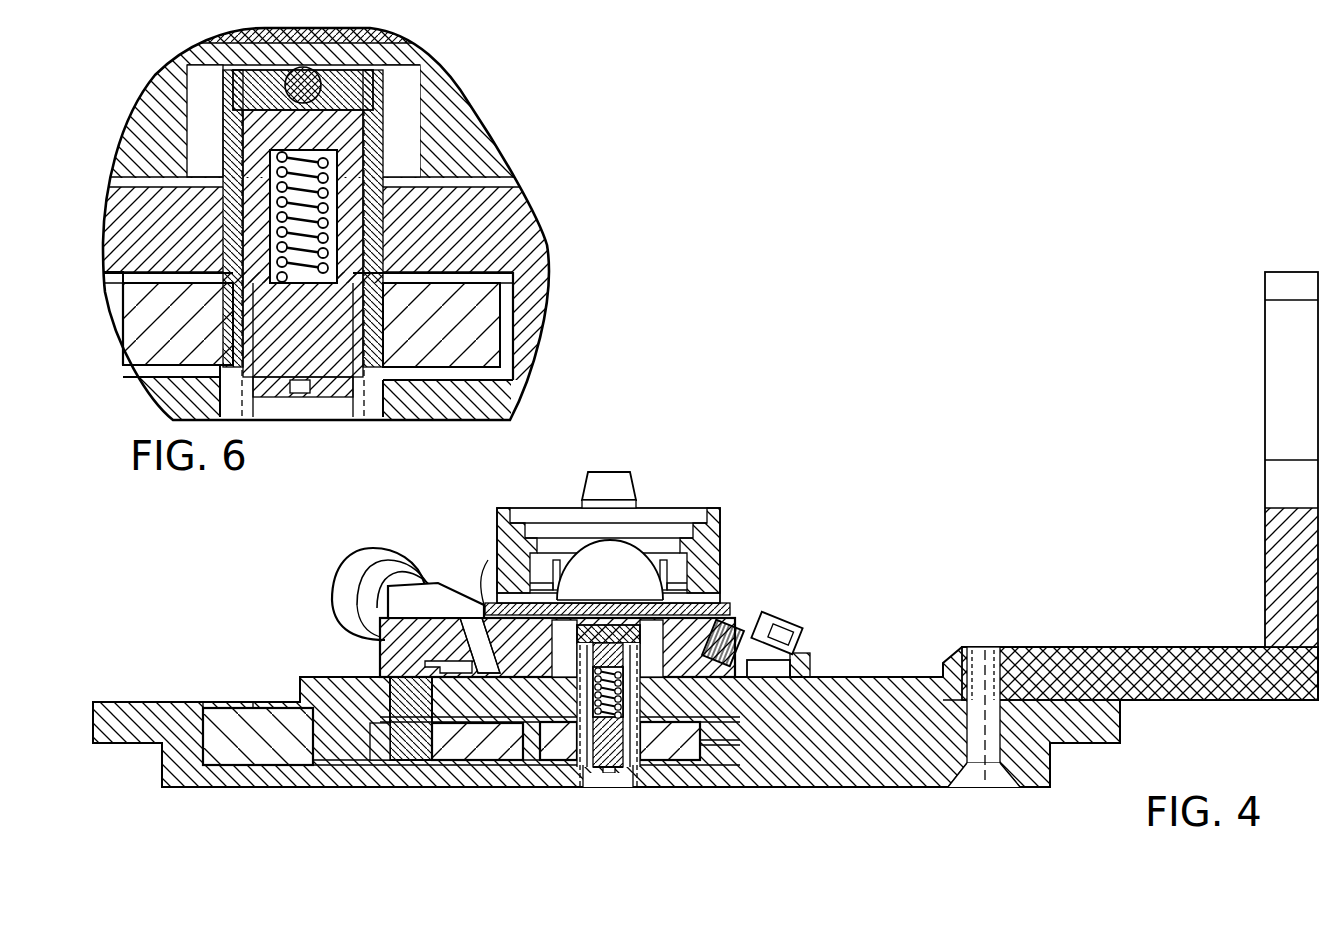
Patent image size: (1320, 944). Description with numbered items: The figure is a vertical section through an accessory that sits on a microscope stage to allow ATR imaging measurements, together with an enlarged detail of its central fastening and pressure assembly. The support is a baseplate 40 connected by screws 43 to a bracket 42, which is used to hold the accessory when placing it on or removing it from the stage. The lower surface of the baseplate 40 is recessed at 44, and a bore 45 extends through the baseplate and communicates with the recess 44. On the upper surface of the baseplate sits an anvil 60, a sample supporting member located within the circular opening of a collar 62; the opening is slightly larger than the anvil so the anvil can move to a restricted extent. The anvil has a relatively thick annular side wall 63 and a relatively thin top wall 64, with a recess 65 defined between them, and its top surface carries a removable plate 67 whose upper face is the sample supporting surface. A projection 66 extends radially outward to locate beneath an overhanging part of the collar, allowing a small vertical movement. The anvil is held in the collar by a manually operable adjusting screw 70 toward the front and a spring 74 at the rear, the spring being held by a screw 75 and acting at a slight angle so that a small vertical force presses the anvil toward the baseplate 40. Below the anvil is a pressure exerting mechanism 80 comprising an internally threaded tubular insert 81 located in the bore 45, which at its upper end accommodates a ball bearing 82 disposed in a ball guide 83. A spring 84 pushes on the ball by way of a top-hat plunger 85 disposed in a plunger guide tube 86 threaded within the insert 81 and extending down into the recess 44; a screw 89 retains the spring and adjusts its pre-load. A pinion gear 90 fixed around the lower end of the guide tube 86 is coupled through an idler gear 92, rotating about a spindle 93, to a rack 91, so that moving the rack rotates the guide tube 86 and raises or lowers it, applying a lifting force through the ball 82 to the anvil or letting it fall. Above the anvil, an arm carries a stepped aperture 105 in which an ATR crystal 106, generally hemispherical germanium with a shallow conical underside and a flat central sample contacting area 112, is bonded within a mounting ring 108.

In FIG. 6, the baseplate 40 is at (543, 280).
In FIG. 4, the baseplate 40 is at (870, 787).
In FIG. 4, the bracket 42 is at (1075, 647).
In FIG. 4, the screws 43 is at (984, 790).
In FIG. 4, the recess 44 is at (703, 727).
In FIG. 4, the bore 45 is at (705, 725).
In FIG. 4, the anvil 60 is at (470, 592).
In FIG. 6, the collar 62 is at (160, 93).
In FIG. 4, the annular side wall 63 is at (497, 640).
In FIG. 6, the top wall 64 is at (332, 48).
In FIG. 6, the recess 65 is at (207, 132).
In FIG. 4, the recess 65 is at (383, 650).
In FIG. 4, the projection 66 is at (432, 670).
In FIG. 4, the removable plate 67 is at (483, 587).
In FIG. 4, the adjusting screw 70 is at (337, 577).
In FIG. 4, the spring 74 is at (752, 618).
In FIG. 4, the screw 75 is at (797, 630).
In FIG. 6, the pressure exerting mechanism 80 is at (303, 430).
In FIG. 4, the pressure exerting mechanism 80 is at (586, 793).
In FIG. 6, the tubular insert 81 is at (365, 128).
In FIG. 4, the tubular insert 81 is at (572, 690).
In FIG. 6, the ball bearing 82 is at (373, 88).
In FIG. 4, the ball bearing 82 is at (640, 628).
In FIG. 6, the ball guide 83 is at (347, 60).
In FIG. 4, the ball guide 83 is at (650, 607).
In FIG. 6, the spring 84 is at (335, 240).
In FIG. 4, the spring 84 is at (648, 790).
In FIG. 6, the top-hat plunger 85 is at (373, 223).
In FIG. 4, the top-hat plunger 85 is at (580, 653).
In FIG. 6, the plunger guide tube 86 is at (353, 300).
In FIG. 4, the plunger guide tube 86 is at (595, 790).
In FIG. 4, the screw 89 is at (610, 745).
In FIG. 6, the pinion gear 90 is at (433, 347).
In FIG. 4, the pinion gear 90 is at (533, 763).
In FIG. 4, the rack 91 is at (262, 747).
In FIG. 4, the idler gear 92 is at (470, 750).
In FIG. 4, the spindle 93 is at (390, 750).
In FIG. 4, the aperture 105 is at (653, 518).
In FIG. 4, the ATR crystal 106 is at (600, 550).
In FIG. 4, the mounting ring 108 is at (530, 587).
In FIG. 4, the flat central area 112 is at (607, 603).